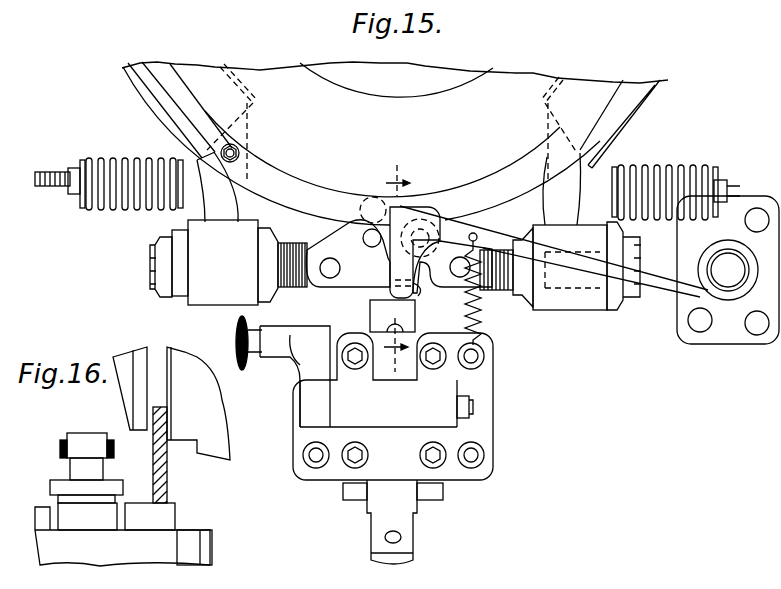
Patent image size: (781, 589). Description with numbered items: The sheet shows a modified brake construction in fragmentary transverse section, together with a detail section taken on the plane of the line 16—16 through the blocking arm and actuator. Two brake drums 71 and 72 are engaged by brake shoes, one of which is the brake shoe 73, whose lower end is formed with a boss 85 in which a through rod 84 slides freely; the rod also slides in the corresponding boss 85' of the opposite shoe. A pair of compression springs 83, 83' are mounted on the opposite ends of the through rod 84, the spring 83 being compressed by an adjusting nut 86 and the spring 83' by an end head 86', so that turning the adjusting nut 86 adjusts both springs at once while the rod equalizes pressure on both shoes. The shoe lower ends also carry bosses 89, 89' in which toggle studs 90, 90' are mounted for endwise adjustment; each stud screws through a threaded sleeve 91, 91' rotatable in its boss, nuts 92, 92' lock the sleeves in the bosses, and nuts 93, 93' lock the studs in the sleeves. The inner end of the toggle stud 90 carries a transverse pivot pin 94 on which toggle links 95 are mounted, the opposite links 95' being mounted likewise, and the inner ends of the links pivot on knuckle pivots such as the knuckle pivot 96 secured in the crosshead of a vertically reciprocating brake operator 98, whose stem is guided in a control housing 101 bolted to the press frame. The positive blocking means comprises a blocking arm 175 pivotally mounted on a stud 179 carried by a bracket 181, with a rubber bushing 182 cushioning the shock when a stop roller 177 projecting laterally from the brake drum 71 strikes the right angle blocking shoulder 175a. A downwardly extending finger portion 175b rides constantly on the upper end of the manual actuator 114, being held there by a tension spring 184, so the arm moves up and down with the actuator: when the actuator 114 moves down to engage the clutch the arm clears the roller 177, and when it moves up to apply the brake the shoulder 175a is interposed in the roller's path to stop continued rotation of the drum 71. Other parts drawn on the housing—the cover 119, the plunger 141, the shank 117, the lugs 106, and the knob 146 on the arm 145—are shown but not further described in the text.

In FIG. 15, the brake drum 71 is at (158, 72).
In FIG. 16, the brake drum 71 is at (140, 407).
In FIG. 15, the brake drum 72 is at (663, 87).
In FIG. 15, the brake shoe 73 is at (147, 115).
In FIG. 15, the stop roller 177 is at (243, 147).
In FIG. 15, the through rod 84 is at (43, 172).
In FIG. 15, the adjusting nut 86 is at (65, 205).
In FIG. 15, the compression spring 83 is at (131, 167).
In FIG. 15, the boss 85 is at (238, 187).
In FIG. 15, the boss 89 is at (215, 274).
In FIG. 15, the nut 92 is at (156, 285).
In FIG. 15, the nut 93 is at (133, 267).
In FIG. 15, the toggle stud 90 is at (256, 265).
In FIG. 15, the threaded sleeve 91 is at (270, 265).
In FIG. 15, the transverse pivot pin 94 is at (325, 275).
In FIG. 15, the toggle link 95 is at (316, 251).
In FIG. 15, the knuckle pivot 96 is at (366, 240).
In FIG. 15, the blocking shoulder 175a is at (368, 203).
In FIG. 15, the blocking arm 175 is at (427, 210).
In FIG. 16, the blocking arm 175 is at (165, 468).
In FIG. 15, the finger portion 175b is at (423, 290).
In FIG. 15, the section line 16— 16 is at (397, 262).
In FIG. 15, the manual actuator 114 is at (366, 311).
In FIG. 16, the manual actuator 114 is at (167, 513).
In FIG. 15, the tension spring 184 is at (482, 308).
In FIG. 15, the toggle link 95' is at (457, 240).
In FIG. 15, the stud 179 is at (715, 268).
In FIG. 15, the rubber bushing 182 is at (730, 292).
In FIG. 15, the bracket 181 is at (757, 343).
In FIG. 15, the end head 86' is at (741, 175).
In FIG. 15, the compression spring 83' is at (665, 172).
In FIG. 15, the boss 85' is at (549, 189).
In FIG. 15, the boss 89' is at (570, 281).
In FIG. 15, the toggle stud 90' is at (530, 267).
In FIG. 15, the threaded sleeve 91' is at (525, 274).
In FIG. 15, the nut 92' is at (618, 283).
In FIG. 15, the nut 93' is at (645, 296).
In FIG. 15, the control housing 101 is at (290, 427).
In FIG. 16, the control housing 101 is at (72, 548).
In FIG. 15, the cover 119 is at (450, 387).
In FIG. 16, the cover 119 is at (200, 548).
In FIG. 15, the plunger 141 is at (472, 408).
In FIG. 15, the shank 117 is at (380, 520).
In FIG. 15, the lug 106 is at (432, 500).
In FIG. 15, the knob 146 is at (280, 362).
In FIG. 15, the arm 145 is at (282, 368).
In FIG. 16, the brake operator 98 is at (80, 468).